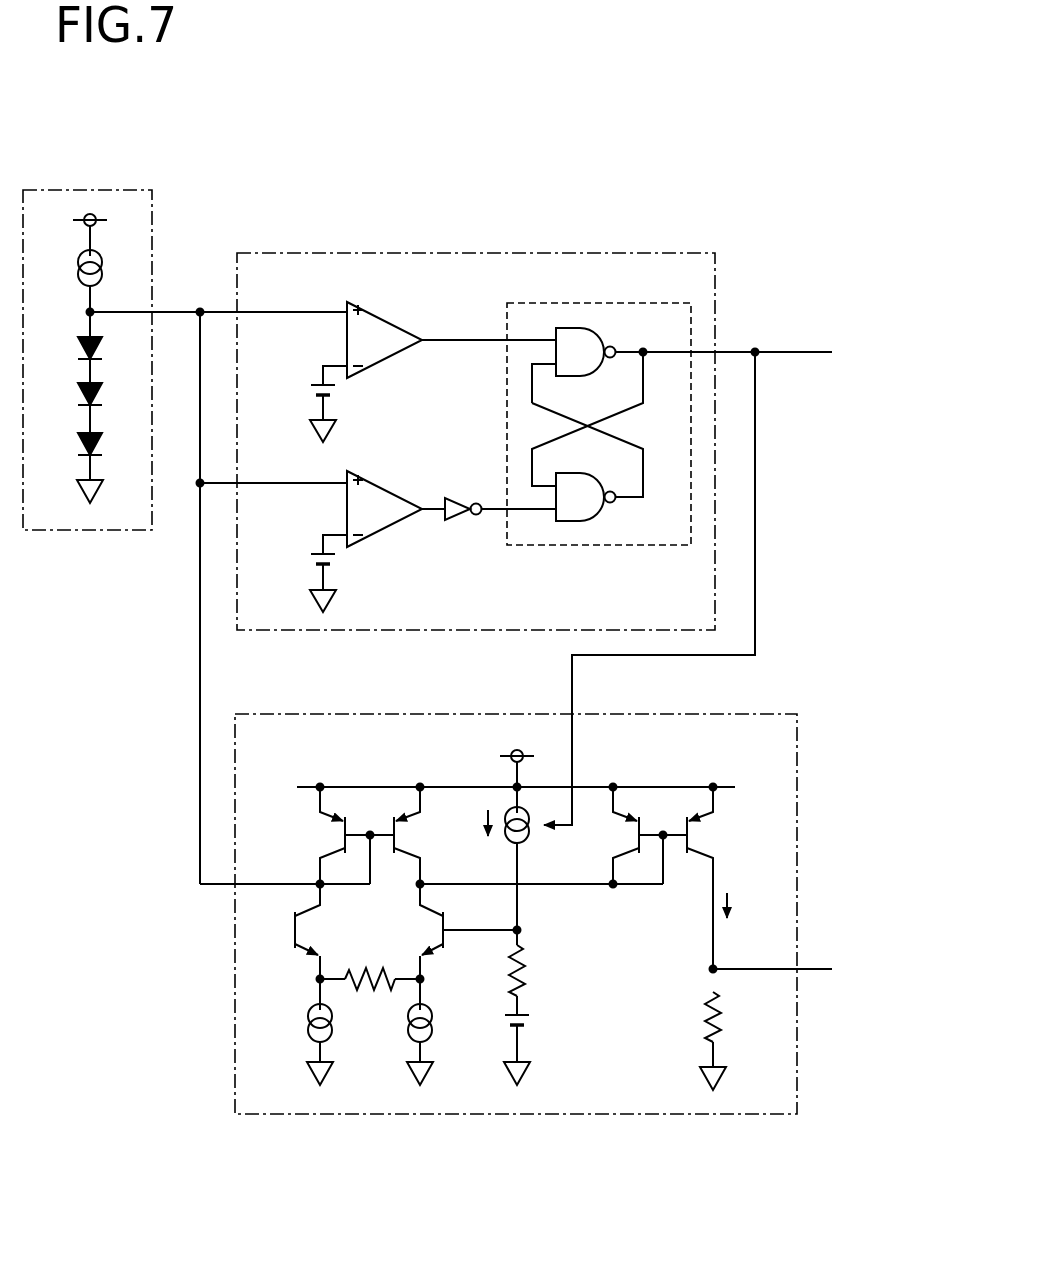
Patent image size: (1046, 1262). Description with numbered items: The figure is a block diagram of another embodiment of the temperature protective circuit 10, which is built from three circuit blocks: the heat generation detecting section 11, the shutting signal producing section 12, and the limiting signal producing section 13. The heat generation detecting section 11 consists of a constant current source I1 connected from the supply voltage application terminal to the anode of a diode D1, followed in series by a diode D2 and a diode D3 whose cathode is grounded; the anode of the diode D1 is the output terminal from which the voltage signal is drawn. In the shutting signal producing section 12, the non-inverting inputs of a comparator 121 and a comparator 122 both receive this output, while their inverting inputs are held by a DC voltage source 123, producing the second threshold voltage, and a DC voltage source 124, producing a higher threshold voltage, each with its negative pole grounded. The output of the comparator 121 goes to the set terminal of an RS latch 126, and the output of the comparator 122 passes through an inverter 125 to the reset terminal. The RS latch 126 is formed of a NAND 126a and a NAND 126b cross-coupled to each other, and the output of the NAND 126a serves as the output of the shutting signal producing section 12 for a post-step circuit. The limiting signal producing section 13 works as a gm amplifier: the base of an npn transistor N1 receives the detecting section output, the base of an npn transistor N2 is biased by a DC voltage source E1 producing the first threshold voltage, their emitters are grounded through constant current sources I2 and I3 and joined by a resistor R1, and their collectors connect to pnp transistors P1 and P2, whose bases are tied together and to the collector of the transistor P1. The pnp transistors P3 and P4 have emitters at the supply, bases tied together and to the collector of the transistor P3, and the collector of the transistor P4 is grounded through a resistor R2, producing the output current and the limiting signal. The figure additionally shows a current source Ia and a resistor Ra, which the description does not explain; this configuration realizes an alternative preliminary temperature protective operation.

The temperature protective circuit 10 is at (429, 124).
The heat generation detecting section 11 is at (95, 190).
The shutting signal producing section 12 is at (481, 254).
The limiting signal producing section 13 is at (473, 710).
The comparator 121 is at (392, 322).
The comparator 122 is at (392, 493).
The DC voltage source 123 is at (312, 392).
The DC voltage source 124 is at (312, 568).
The inverter 125 is at (470, 485).
The RS latch 126 is at (588, 302).
The NAND 126a is at (604, 340).
The NAND 126b is at (601, 526).
The constant current source I1 is at (78, 268).
The diode D1 is at (76, 347).
The diode D2 is at (76, 395).
The diode D3 is at (76, 445).
The current source Ia is at (530, 832).
The pnp-type bipolar transistor P1 is at (340, 835).
The pnp-type bipolar transistor P2 is at (416, 835).
The pnp-type bipolar transistor P3 is at (633, 835).
The pnp-type bipolar transistor P4 is at (707, 878).
The npn-type bipolar transistor N1 is at (294, 924).
The npn-type bipolar transistor N2 is at (444, 924).
The resistor R1 is at (373, 974).
The resistor R2 is at (722, 1018).
The resistor Ra is at (528, 970).
The DC voltage source E1 is at (528, 1020).
The constant current source I2 is at (308, 1022).
The constant current source I3 is at (432, 1022).